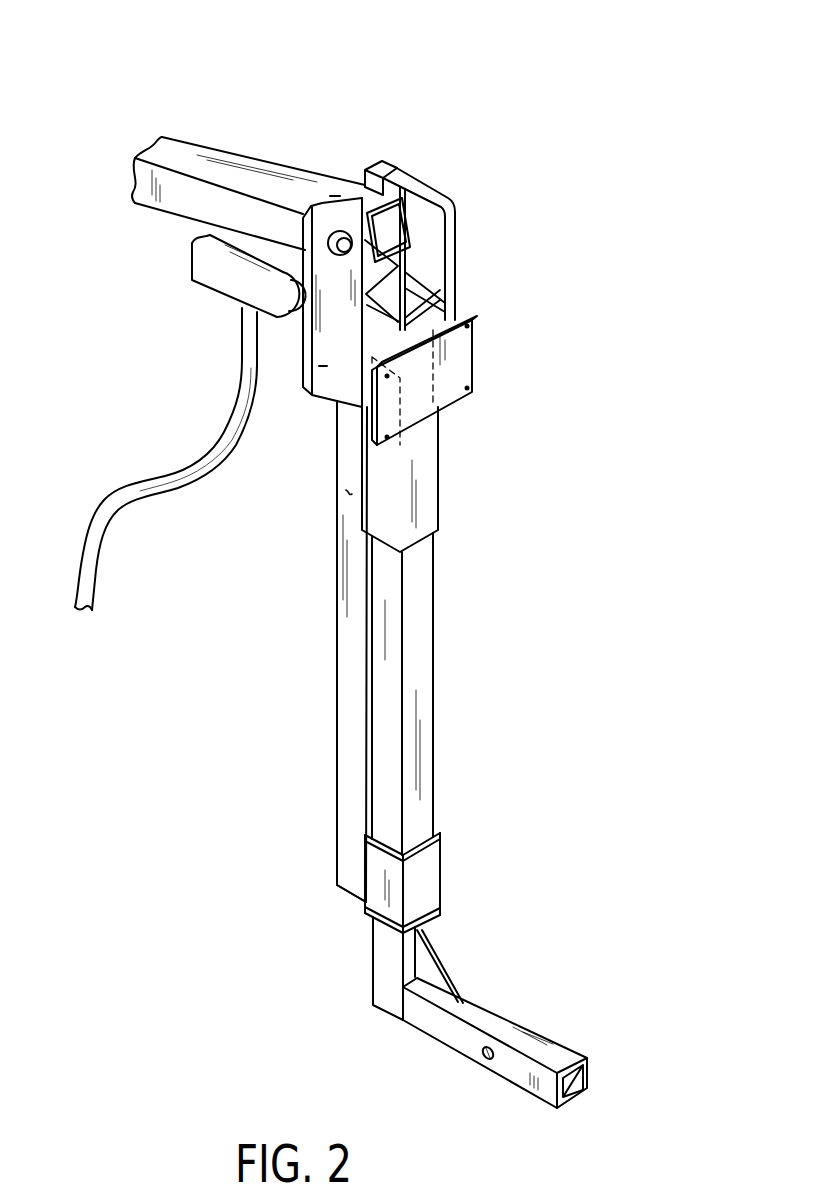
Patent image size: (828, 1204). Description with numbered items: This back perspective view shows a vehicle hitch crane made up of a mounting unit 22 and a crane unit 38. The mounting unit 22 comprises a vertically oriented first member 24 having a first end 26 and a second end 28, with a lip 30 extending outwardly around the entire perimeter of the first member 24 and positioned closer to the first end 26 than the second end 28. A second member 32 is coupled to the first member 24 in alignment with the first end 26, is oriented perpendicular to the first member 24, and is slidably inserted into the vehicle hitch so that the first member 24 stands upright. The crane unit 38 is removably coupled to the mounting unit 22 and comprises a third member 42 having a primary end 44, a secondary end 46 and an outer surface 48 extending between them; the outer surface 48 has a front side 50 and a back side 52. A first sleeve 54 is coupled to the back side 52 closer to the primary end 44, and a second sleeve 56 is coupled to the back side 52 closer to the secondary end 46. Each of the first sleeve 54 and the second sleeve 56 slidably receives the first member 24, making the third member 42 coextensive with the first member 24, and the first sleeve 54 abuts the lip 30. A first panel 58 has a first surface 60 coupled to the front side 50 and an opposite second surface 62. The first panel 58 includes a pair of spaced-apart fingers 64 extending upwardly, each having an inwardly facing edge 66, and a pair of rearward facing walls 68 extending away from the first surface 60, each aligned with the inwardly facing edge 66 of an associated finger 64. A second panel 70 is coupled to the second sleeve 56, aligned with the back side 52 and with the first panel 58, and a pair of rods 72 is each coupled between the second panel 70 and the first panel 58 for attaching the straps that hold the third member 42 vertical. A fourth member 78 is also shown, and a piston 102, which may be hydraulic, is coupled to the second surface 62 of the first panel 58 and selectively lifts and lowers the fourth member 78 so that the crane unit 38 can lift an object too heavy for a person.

The mounting unit 22 is at (322, 689).
The first member 24 is at (435, 752).
The first end 26 is at (389, 1010).
The second end 28 is at (402, 322).
The lip 30 is at (385, 918).
The second member 32 is at (547, 1032).
The crane unit 38 is at (304, 158).
The third member 42 is at (337, 607).
The primary end 44 is at (345, 892).
The secondary end 46 is at (388, 266).
The outer surface 48 is at (354, 493).
The front side 50 is at (340, 757).
The back side 52 is at (370, 580).
The first sleeve 54 is at (440, 887).
The second sleeve 56 is at (440, 472).
The first panel 58 is at (305, 350).
The first surface 60 is at (323, 368).
The second surface 62 is at (305, 381).
The fingers 64 is at (388, 278).
The inwardly facing edge 66 is at (352, 194).
The rearward facing walls 68 is at (365, 292).
The second panel 70 is at (478, 370).
The rods 72 is at (451, 202).
The fourth member 78 is at (212, 150).
The piston 102 is at (208, 287).